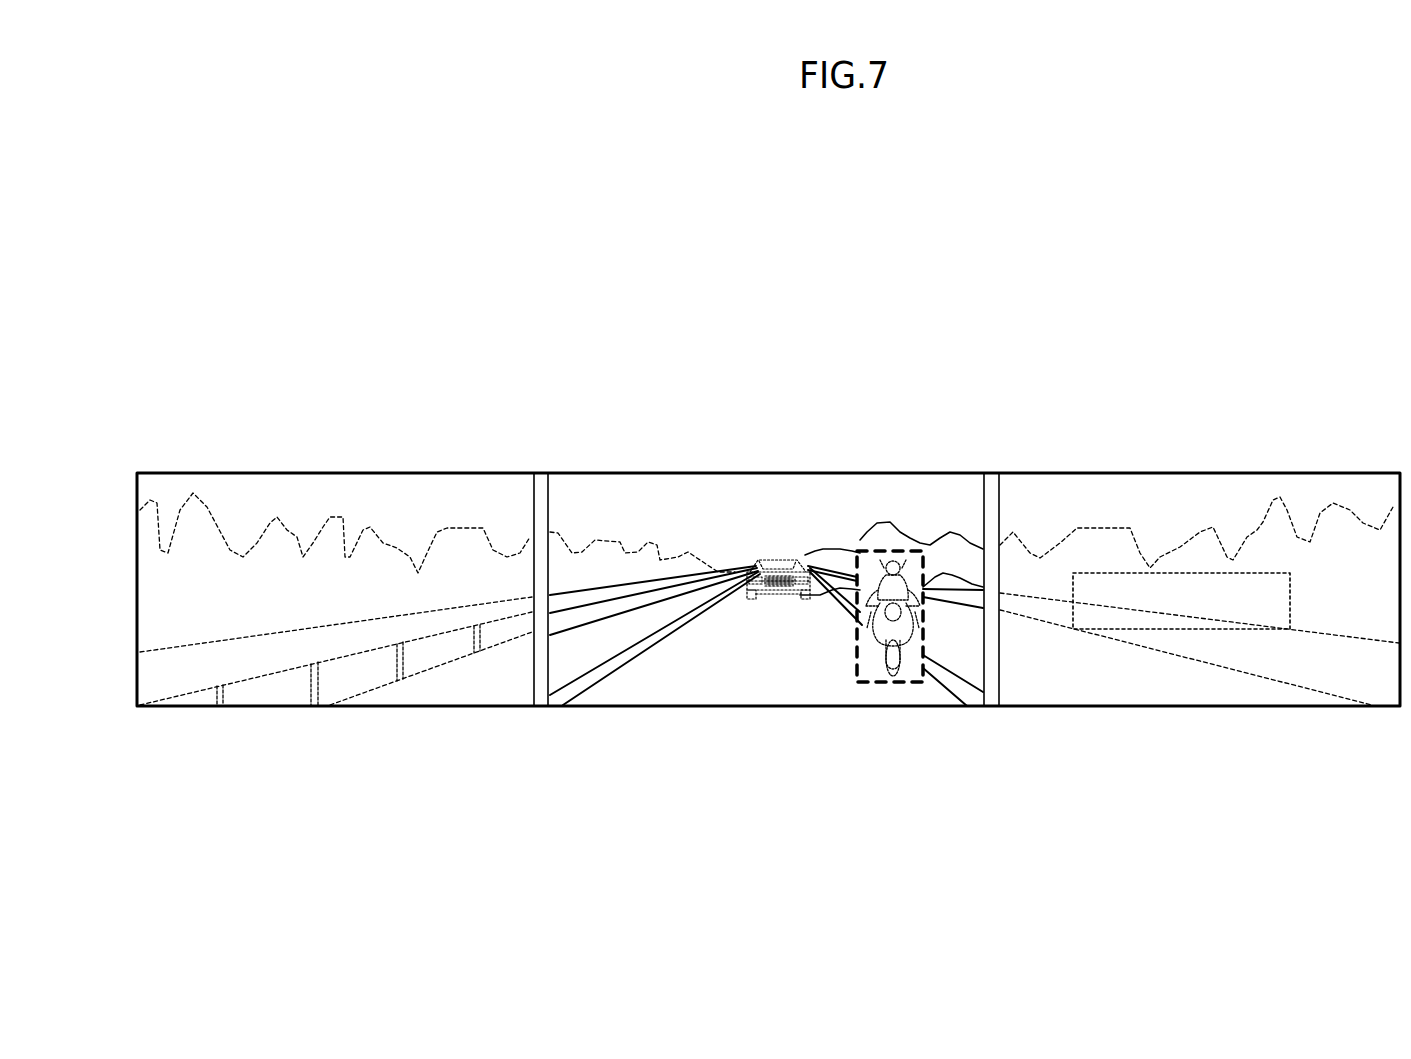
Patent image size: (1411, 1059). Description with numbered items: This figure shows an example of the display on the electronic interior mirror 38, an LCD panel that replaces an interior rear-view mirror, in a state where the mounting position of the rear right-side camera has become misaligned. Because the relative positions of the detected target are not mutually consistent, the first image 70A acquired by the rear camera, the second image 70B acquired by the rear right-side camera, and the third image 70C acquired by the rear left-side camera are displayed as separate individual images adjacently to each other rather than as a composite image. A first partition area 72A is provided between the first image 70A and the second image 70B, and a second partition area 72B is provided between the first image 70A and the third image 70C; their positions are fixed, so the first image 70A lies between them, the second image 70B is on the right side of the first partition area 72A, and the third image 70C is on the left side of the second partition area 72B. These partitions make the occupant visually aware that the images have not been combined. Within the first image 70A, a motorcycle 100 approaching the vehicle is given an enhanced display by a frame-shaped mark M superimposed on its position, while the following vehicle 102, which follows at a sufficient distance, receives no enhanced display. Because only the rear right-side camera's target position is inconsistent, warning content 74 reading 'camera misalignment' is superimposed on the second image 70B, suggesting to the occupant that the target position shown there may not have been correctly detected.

The electronic interior mirror 38 is at (1129, 408).
The first image 70A is at (812, 597).
The second image 70B is at (1199, 651).
The third image 70C is at (355, 707).
The first partition area 72A is at (993, 707).
The second partition area 72B is at (542, 707).
The warning content 74 is at (1290, 598).
The motorcycle 100 is at (897, 575).
The following vehicle 102 is at (768, 562).
The frame-shaped mark M is at (865, 556).